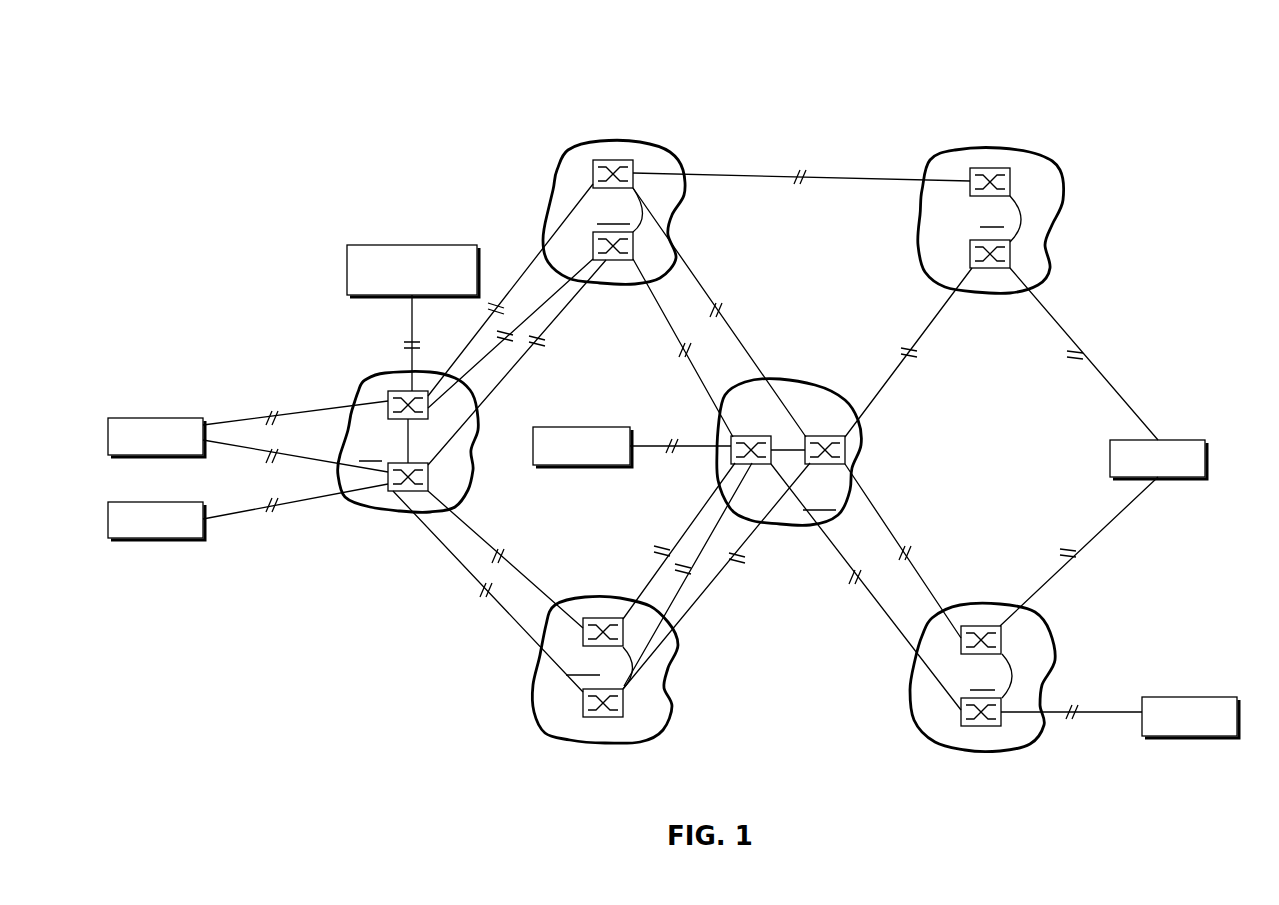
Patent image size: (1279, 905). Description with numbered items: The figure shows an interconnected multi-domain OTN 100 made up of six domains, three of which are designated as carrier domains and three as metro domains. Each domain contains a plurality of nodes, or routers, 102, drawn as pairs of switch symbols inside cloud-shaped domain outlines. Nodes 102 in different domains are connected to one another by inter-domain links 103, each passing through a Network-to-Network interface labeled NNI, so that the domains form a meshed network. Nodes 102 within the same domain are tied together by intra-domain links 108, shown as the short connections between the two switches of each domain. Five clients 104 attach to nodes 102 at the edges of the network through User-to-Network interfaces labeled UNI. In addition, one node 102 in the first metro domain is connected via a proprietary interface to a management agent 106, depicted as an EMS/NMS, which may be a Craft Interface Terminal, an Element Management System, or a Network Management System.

The interconnected multi-domain OTN 100 is at (667, 418).
The node 102 is at (676, 453).
The inter-domain link 103 is at (682, 418).
The client 104 is at (667, 555).
The management agent 106 is at (410, 243).
The intra-domain link 108 is at (716, 442).